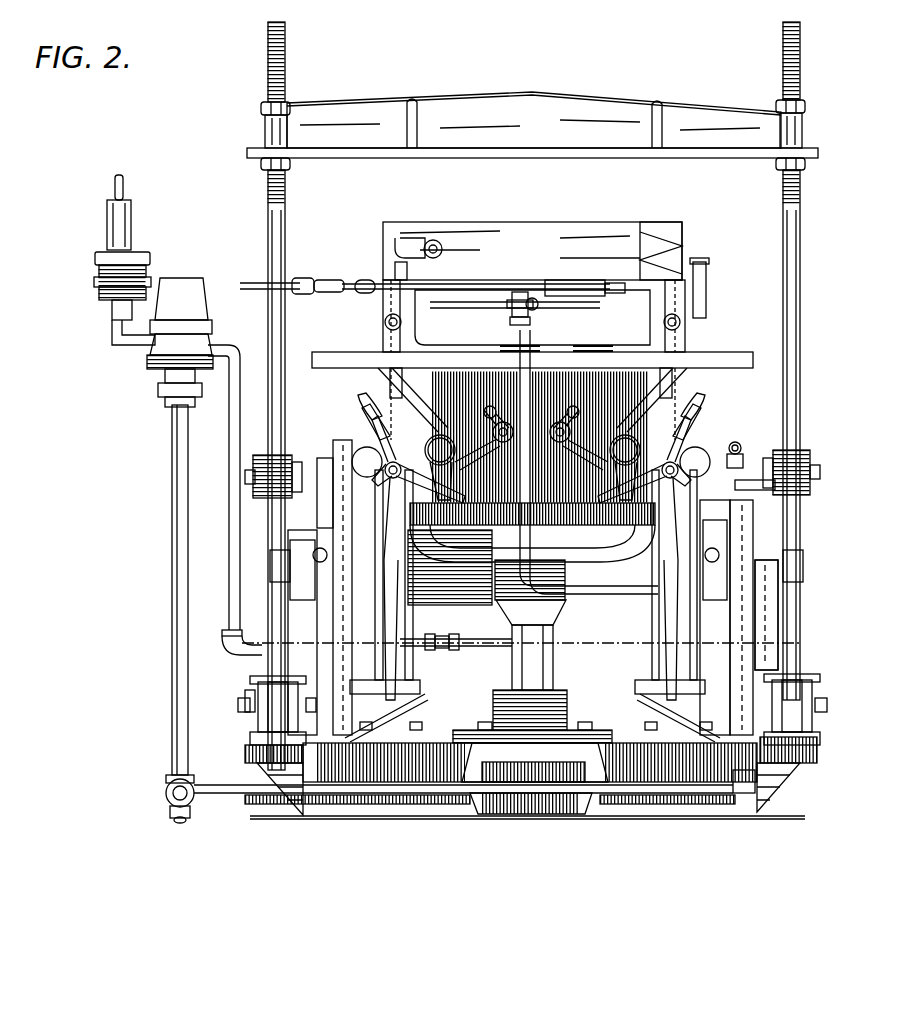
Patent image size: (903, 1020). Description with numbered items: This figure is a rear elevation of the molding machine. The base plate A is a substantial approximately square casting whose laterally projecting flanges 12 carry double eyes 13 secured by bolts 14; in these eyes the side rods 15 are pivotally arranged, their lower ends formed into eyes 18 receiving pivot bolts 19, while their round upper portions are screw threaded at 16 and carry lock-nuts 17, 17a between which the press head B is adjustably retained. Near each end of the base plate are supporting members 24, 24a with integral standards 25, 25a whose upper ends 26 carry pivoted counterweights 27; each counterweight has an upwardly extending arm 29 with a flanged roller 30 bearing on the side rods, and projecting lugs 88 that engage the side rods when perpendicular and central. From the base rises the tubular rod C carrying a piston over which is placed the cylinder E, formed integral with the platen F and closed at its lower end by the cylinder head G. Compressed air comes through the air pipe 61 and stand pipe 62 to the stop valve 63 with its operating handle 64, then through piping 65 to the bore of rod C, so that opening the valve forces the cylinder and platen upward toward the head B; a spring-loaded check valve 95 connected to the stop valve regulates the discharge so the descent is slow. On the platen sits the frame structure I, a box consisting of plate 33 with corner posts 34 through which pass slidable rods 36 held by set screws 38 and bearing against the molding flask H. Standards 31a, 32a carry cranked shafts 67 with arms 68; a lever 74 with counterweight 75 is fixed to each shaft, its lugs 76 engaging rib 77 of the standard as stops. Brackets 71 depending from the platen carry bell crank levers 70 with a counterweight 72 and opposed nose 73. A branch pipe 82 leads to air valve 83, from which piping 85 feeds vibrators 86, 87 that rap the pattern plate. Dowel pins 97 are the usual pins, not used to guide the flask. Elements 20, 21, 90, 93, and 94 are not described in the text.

The laterally projecting flange 12 is at (243, 756).
The double eye 13 is at (248, 680).
The bolt 14 is at (280, 790).
The side rod 15 is at (266, 252).
The screw threaded portion 16 is at (286, 74).
The lock-nut 17 is at (258, 108).
The lock-nut 17a is at (256, 165).
The eye 18 is at (276, 680).
The pivot bolt 19 is at (236, 706).
The column base 20 is at (570, 706).
The base flange 21 is at (475, 720).
The supporting member 24 is at (690, 708).
The supporting member 24a is at (380, 712).
The standard 25 is at (756, 584).
The standard 25a is at (330, 518).
The upper end of standard 26 is at (286, 530).
The counterweight 27 is at (300, 606).
The upwardly extending arm 29 is at (315, 506).
The flanged roller 30 is at (272, 452).
The standard 31a is at (652, 643).
The standard 32a is at (414, 650).
The plate 33 is at (500, 317).
The post 34 is at (380, 334).
The slidable rod 36 is at (380, 376).
The set screw 38 is at (383, 318).
The air pipe 61 is at (163, 808).
The stand pipe 62 is at (168, 590).
The stop valve 63 is at (148, 372).
The operating handle 64 is at (345, 280).
The piping 65 is at (456, 650).
The cranked shaft 67 is at (356, 424).
The arm 68 is at (360, 410).
The bell crank lever 70 is at (532, 467).
The bracket 71 is at (531, 428).
The counterweight 72 is at (385, 430).
The nose 73 is at (450, 470).
The lever 74 is at (418, 490).
The counterweight 75 is at (531, 462).
The lug 76 is at (375, 486).
The rib 77 is at (400, 618).
The branch pipe 82 is at (779, 636).
The air valve 83 is at (740, 452).
The piping 85 is at (620, 598).
The vibrator 86 is at (585, 280).
The vibrator 87 is at (356, 278).
The projecting lug 88 is at (268, 566).
The rod 90 is at (470, 312).
The box 93 is at (450, 567).
The bar 94 is at (345, 446).
The check valve 95 is at (106, 240).
The dowel pin 97 is at (300, 292).
The base plate A is at (525, 781).
The press head B is at (534, 120).
The upstanding rod C is at (556, 658).
The cylinder E is at (532, 321).
The platen F is at (768, 354).
The cylinder head G is at (532, 499).
The molding flask H is at (532, 251).
The frame structure I is at (620, 317).